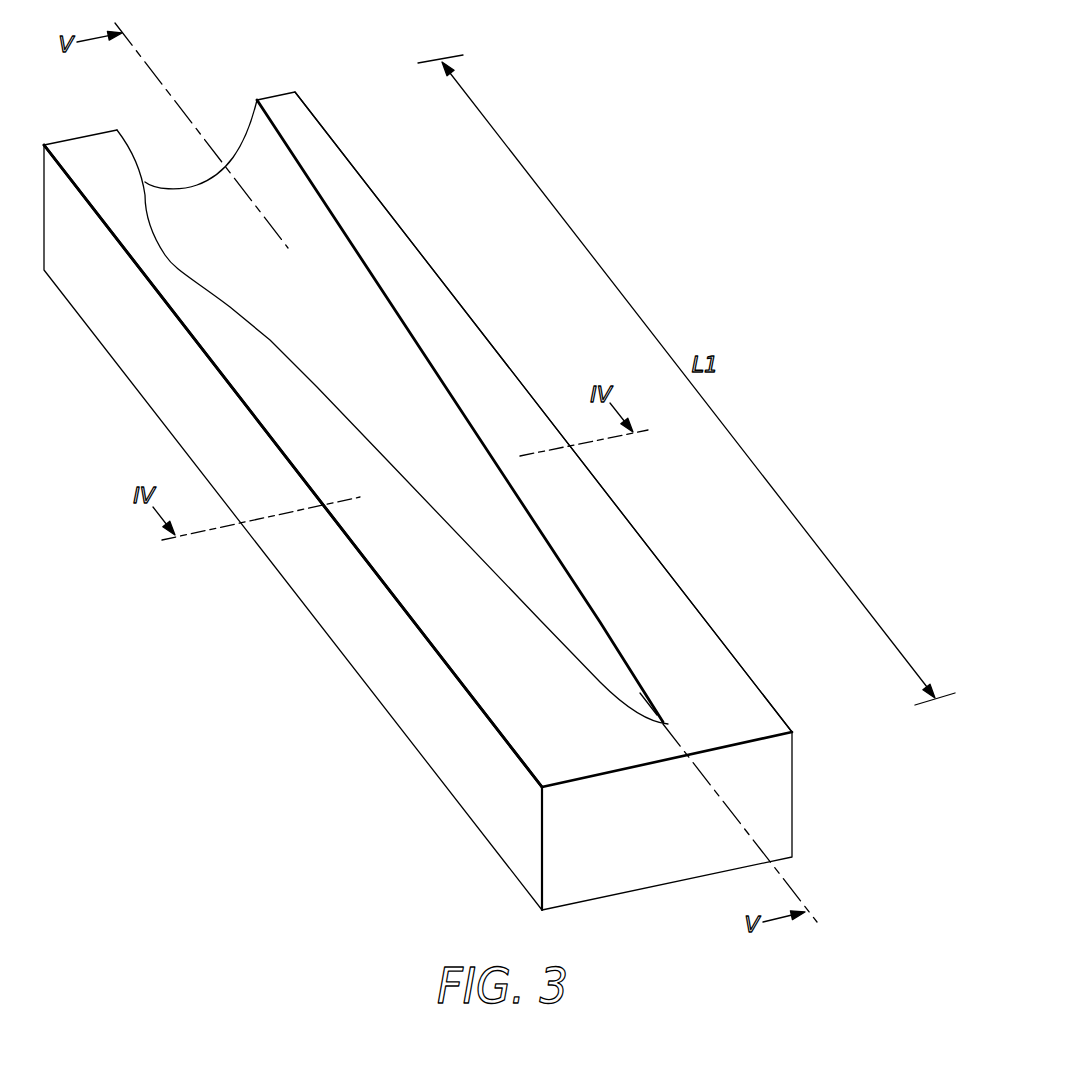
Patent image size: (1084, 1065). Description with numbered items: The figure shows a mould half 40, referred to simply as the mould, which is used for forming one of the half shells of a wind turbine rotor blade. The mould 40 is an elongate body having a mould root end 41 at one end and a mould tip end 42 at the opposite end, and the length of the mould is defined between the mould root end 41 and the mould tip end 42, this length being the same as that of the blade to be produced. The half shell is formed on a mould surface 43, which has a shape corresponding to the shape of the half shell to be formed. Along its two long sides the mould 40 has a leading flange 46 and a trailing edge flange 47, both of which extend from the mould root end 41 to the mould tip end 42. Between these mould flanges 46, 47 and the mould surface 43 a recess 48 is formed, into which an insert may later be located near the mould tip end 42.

The mould half 40 is at (327, 815).
The mould root end 41 is at (252, 131).
The mould tip end 42 is at (668, 724).
The mould surface 43 is at (365, 401).
The leading flange 46 is at (478, 366).
The trailing edge flange 47 is at (413, 577).
The recess 48 is at (349, 284).